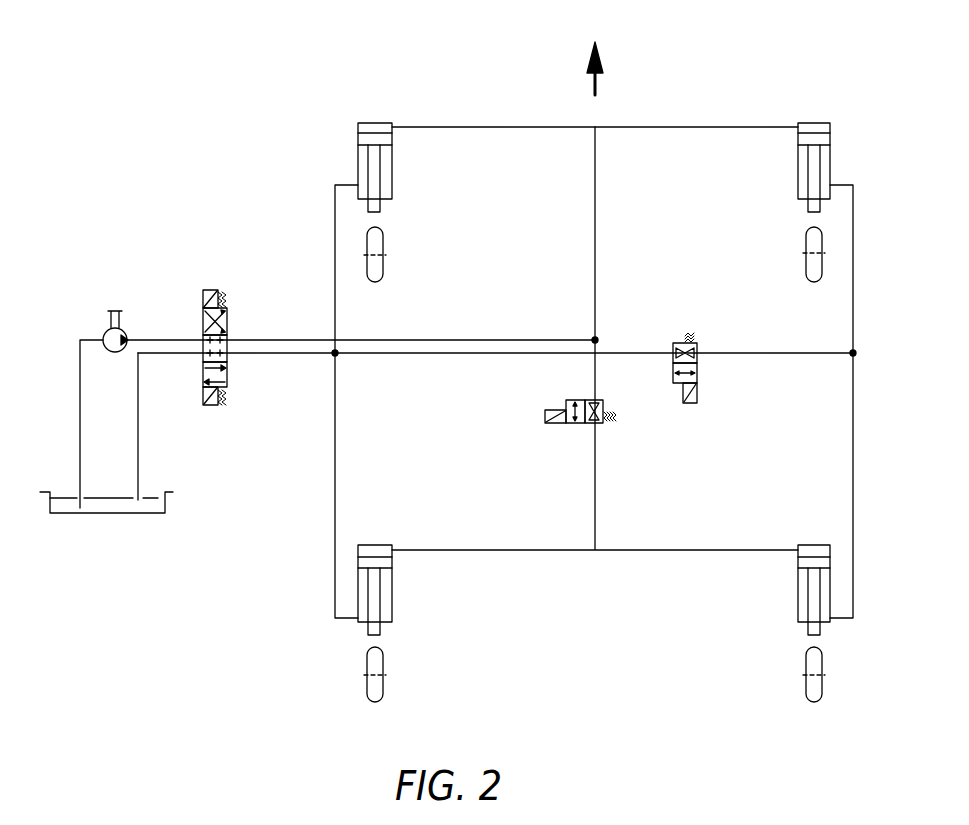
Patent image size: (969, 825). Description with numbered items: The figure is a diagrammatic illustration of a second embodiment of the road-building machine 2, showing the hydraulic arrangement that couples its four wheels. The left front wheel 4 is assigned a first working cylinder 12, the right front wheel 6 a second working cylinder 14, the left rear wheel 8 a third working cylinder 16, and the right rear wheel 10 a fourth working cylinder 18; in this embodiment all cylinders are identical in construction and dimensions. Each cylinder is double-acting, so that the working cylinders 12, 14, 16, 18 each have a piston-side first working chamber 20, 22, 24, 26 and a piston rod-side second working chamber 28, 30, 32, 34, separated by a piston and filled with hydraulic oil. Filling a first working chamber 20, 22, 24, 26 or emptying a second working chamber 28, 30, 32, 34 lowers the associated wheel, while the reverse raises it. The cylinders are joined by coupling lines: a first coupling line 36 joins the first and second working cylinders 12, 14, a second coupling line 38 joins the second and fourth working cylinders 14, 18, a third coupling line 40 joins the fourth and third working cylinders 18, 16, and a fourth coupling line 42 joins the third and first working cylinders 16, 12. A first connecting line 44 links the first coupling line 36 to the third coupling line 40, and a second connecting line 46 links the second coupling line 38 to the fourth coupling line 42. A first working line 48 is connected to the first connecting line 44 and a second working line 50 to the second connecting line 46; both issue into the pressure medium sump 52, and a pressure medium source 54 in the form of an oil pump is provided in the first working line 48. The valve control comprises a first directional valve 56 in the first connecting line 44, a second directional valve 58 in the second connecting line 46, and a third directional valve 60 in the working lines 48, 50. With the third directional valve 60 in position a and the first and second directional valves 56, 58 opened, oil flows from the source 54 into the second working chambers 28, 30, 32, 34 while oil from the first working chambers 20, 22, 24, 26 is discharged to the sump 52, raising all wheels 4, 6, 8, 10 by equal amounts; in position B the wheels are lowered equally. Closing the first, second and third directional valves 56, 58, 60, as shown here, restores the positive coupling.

The road-building machine 2 is at (274, 62).
The left front wheel 4 is at (383, 265).
The right front wheel 6 is at (805, 265).
The left rear wheel 8 is at (383, 687).
The right rear wheel 10 is at (805, 687).
The first working cylinder 12 is at (506, 167).
The second working cylinder 14 is at (786, 190).
The third working cylinder 16 is at (417, 611).
The fourth working cylinder 18 is at (771, 611).
The first working chamber 20 is at (373, 130).
The first working chamber 22 is at (812, 128).
The first working chamber 24 is at (373, 550).
The first working chamber 26 is at (812, 550).
The second working chamber 28 is at (387, 185).
The second working chamber 30 is at (802, 185).
The second working chamber 32 is at (387, 610).
The second working chamber 34 is at (800, 612).
The first coupling line 36 is at (700, 127).
The second coupling line 38 is at (853, 305).
The third coupling line 40 is at (630, 550).
The fourth coupling line 42 is at (335, 432).
The first connecting line 44 is at (596, 258).
The second connecting line 46 is at (448, 355).
The first working line 48 is at (383, 337).
The second working line 50 is at (287, 356).
The pressure medium sump 52 is at (153, 489).
The pressure medium source 54 is at (115, 306).
The first directional valve 56 is at (532, 418).
The second directional valve 58 is at (688, 418).
The third directional valve 60 is at (242, 293).